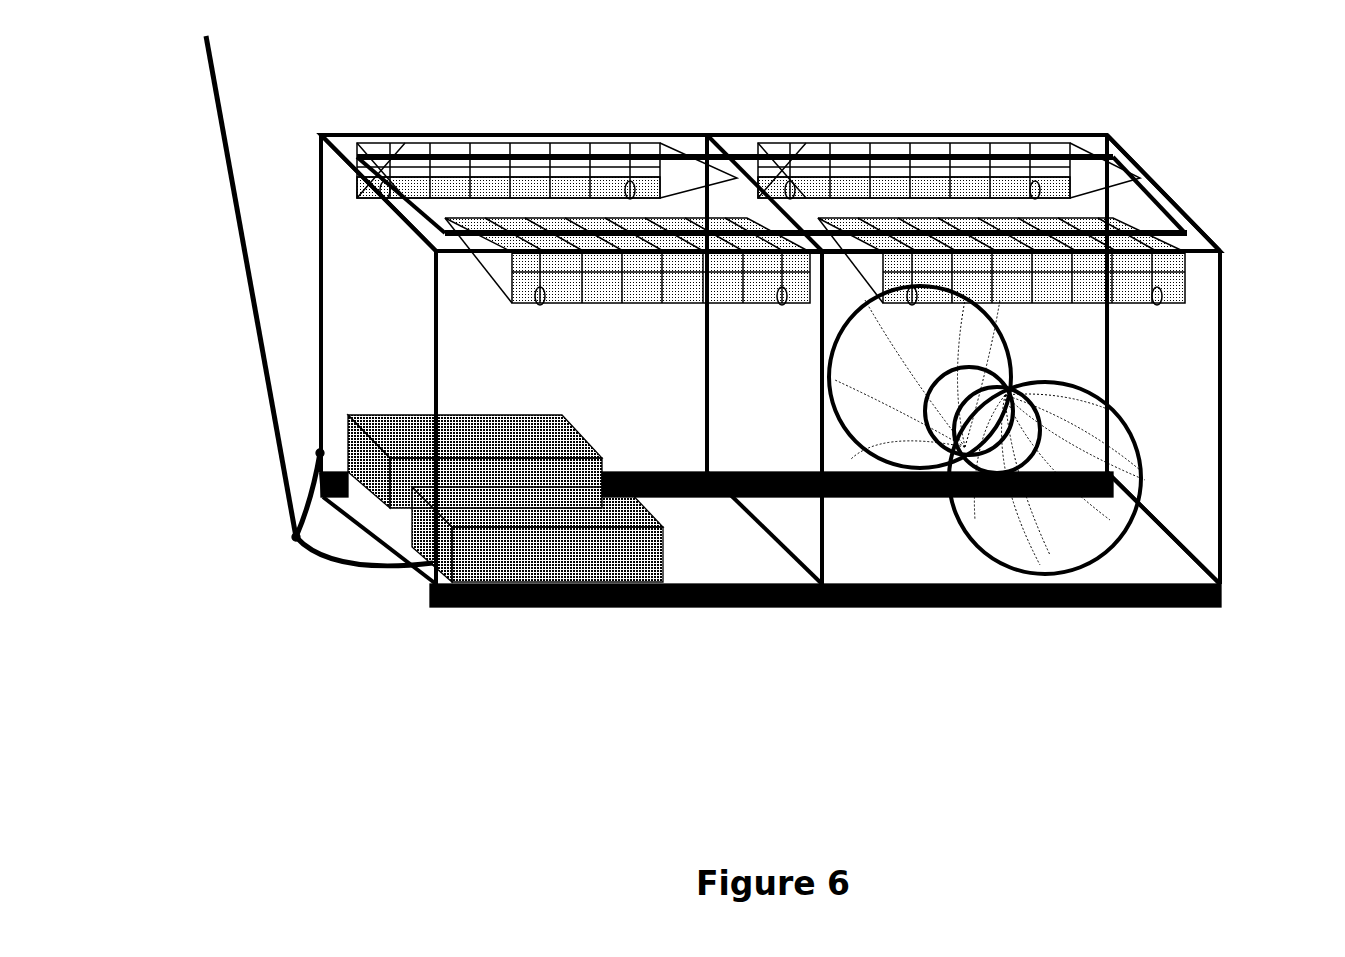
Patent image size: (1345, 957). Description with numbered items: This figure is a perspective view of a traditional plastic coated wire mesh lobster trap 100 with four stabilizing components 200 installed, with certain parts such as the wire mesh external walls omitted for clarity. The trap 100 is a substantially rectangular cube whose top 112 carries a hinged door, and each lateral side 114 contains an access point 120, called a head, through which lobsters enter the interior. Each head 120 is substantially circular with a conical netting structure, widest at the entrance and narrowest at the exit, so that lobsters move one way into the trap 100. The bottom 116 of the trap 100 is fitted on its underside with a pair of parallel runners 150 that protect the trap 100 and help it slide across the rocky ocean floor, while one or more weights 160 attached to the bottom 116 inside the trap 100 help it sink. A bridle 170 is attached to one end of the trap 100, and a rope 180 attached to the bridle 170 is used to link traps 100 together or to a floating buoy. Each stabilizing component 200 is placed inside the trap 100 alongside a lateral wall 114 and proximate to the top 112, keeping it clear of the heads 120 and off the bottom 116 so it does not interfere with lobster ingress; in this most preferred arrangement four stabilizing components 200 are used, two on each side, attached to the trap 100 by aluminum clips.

The wire lobster trap 100 is at (1170, 190).
The top 112 is at (343, 142).
The lateral side 114 is at (343, 227).
The bottom 116 is at (1150, 565).
The access point (head) 120 is at (1145, 475).
The runners 150 is at (963, 607).
The weights 160 is at (582, 607).
The bridle 170 is at (310, 555).
The rope 180 is at (272, 432).
The stabilizing component 200 is at (553, 140).